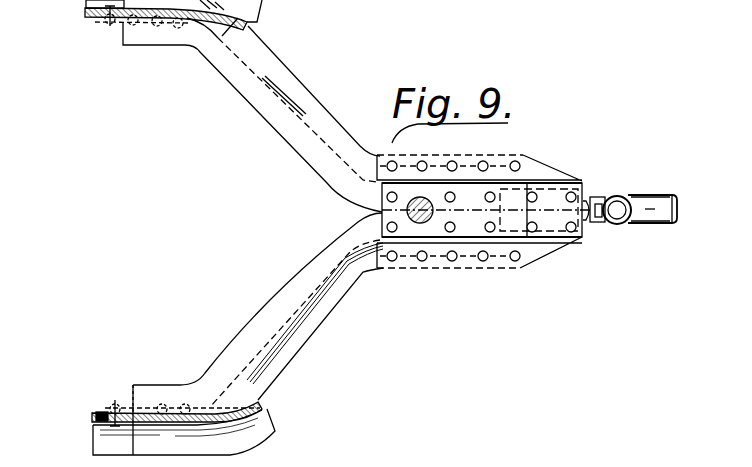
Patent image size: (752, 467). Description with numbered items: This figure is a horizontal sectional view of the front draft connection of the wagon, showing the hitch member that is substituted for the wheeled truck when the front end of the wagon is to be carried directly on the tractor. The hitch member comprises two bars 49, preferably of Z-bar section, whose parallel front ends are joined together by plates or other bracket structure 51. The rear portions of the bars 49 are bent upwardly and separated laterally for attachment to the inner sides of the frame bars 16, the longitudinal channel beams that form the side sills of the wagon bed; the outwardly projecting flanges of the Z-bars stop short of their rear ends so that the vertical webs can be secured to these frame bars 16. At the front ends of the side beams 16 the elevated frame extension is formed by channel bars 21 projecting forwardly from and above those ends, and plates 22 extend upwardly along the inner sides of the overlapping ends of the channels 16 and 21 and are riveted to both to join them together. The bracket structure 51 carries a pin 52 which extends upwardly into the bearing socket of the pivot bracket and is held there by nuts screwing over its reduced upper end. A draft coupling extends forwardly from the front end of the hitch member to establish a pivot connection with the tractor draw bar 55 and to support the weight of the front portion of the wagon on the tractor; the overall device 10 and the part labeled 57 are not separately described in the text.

The towing device 10 is at (418, 7).
The longitudinal beams 16 is at (93, 425).
The channel bars 21 is at (252, 21).
The plates 22 is at (95, 20).
The bars 49 is at (325, 180).
The bracket structure 51 is at (468, 258).
The pin 52 is at (418, 225).
The tractor draw bar 55 is at (648, 199).
The eye member 57 is at (597, 222).